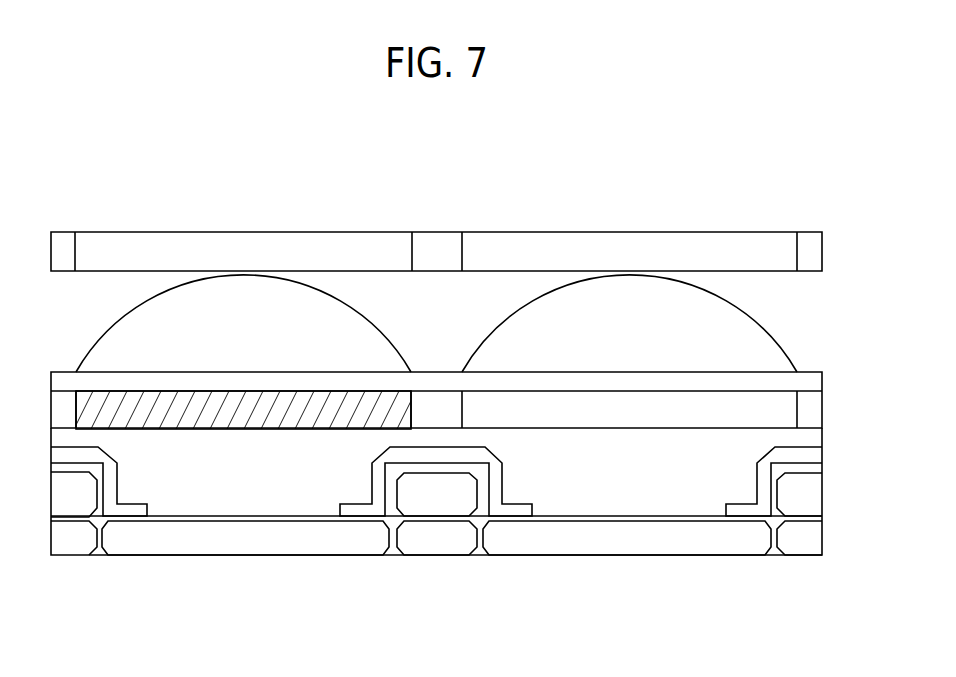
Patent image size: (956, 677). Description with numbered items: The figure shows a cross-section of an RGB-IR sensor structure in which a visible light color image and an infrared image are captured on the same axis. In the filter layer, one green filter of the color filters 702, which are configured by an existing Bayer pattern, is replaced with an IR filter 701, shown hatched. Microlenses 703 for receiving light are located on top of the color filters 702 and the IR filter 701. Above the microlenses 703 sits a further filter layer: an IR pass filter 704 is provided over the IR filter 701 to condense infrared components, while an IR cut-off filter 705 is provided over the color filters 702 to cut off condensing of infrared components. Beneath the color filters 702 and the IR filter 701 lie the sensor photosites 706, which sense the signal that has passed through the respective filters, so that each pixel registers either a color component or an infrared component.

The IR filter 701 is at (223, 428).
The color filters 702 is at (655, 406).
The microlenses 703 is at (618, 288).
The IR pass filter 704 is at (223, 190).
The IR cut-off filter 705 is at (645, 240).
The sensor photosites 706 is at (513, 555).